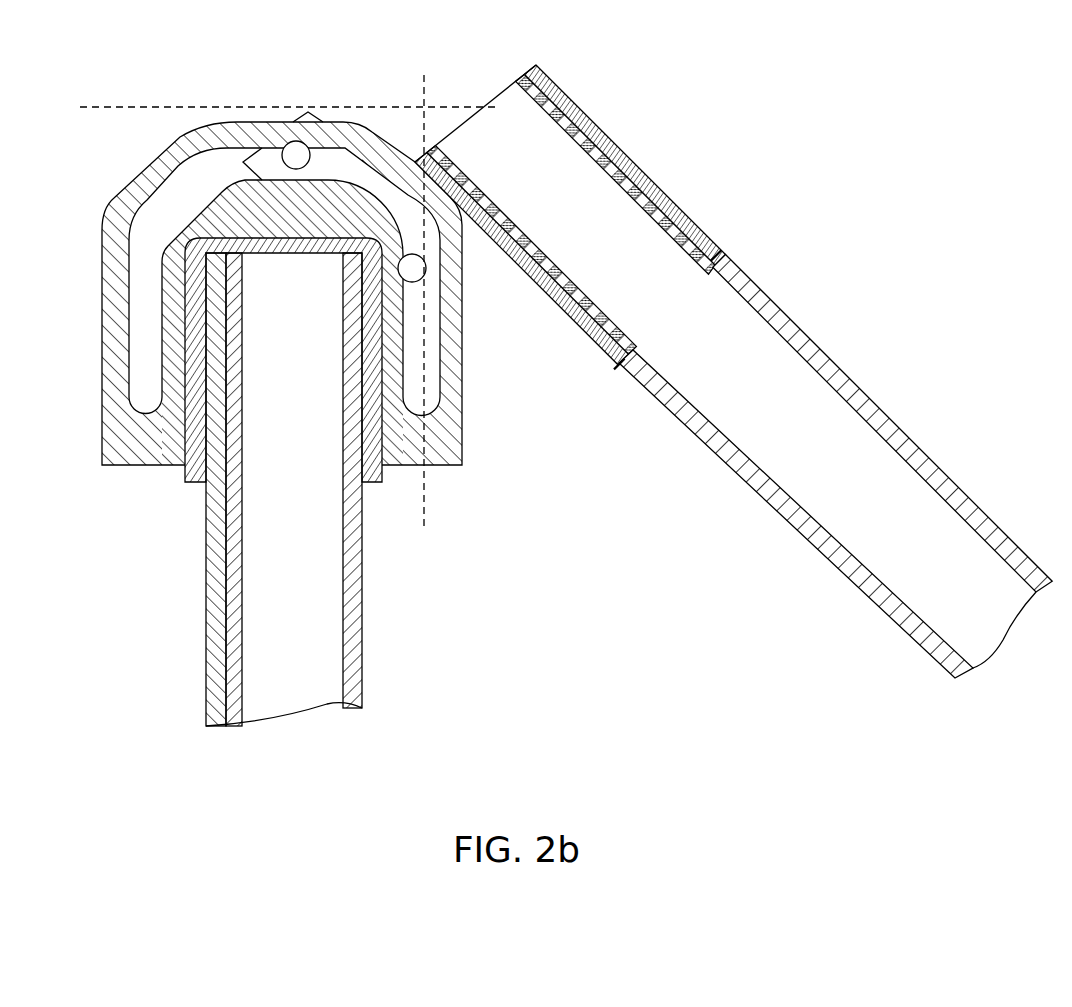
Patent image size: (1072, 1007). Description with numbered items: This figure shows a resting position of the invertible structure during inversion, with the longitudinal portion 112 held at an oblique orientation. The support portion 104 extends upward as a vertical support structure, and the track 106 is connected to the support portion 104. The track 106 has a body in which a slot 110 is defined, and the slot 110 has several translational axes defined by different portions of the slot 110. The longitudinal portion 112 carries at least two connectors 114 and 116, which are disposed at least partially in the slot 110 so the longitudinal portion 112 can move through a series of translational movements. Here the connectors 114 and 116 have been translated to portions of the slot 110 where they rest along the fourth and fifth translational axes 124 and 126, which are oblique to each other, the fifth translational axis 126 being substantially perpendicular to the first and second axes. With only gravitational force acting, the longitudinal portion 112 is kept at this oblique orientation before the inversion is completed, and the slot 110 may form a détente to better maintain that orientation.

The support portion 104 is at (332, 668).
The track 106 is at (480, 428).
The slot 110 is at (147, 402).
The longitudinal portion 112 is at (762, 348).
The connector 114 is at (415, 270).
The connector 116 is at (296, 153).
The fourth translational axis 124 is at (445, 505).
The fifth translational axis 126 is at (303, 288).